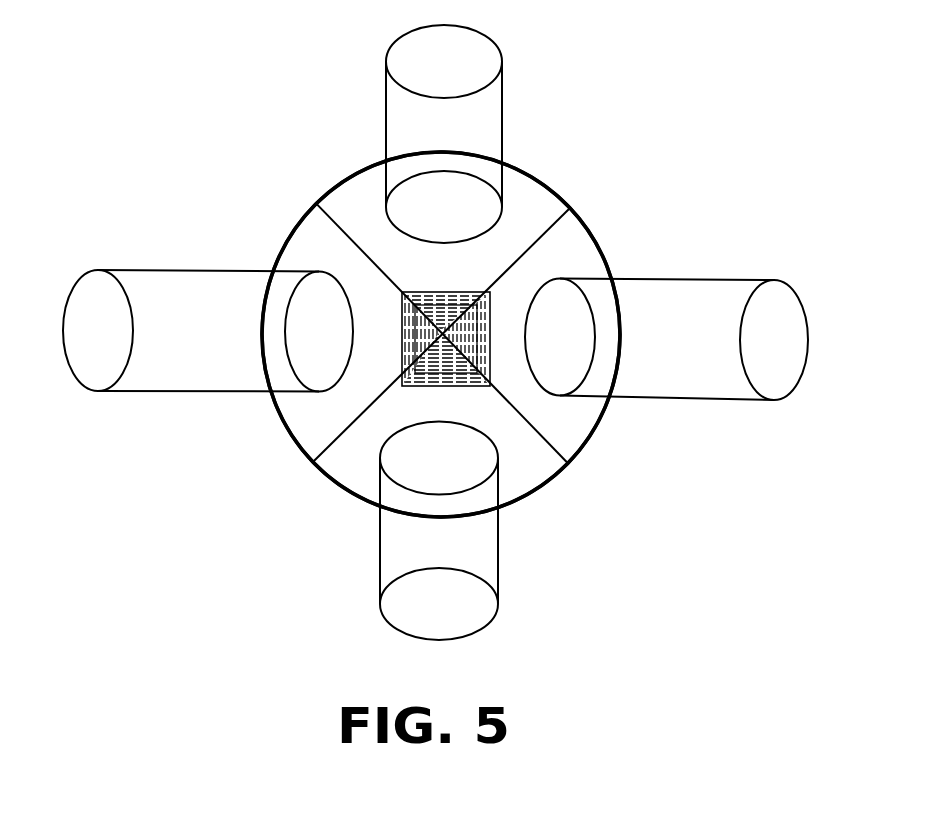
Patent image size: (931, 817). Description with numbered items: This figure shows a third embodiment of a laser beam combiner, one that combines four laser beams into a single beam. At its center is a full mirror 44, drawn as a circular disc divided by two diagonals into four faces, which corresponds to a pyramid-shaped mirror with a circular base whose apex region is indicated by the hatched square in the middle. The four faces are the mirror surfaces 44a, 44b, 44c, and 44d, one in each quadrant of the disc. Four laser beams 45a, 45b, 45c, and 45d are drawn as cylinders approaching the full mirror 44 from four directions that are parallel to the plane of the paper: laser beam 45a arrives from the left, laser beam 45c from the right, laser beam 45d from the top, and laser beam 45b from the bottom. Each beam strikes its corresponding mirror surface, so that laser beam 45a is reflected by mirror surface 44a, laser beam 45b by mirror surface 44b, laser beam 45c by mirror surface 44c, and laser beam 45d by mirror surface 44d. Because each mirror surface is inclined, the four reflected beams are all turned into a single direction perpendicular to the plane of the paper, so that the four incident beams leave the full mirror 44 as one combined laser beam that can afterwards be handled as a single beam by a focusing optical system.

The full mirror 44 is at (602, 250).
The mirror surface 44a is at (307, 435).
The mirror surface 44b is at (540, 473).
The mirror surface 44c is at (578, 240).
The mirror surface 44d is at (530, 187).
The laser beam 45a is at (172, 270).
The laser beam 45b is at (500, 548).
The laser beam 45c is at (728, 278).
The laser beam 45d is at (505, 90).